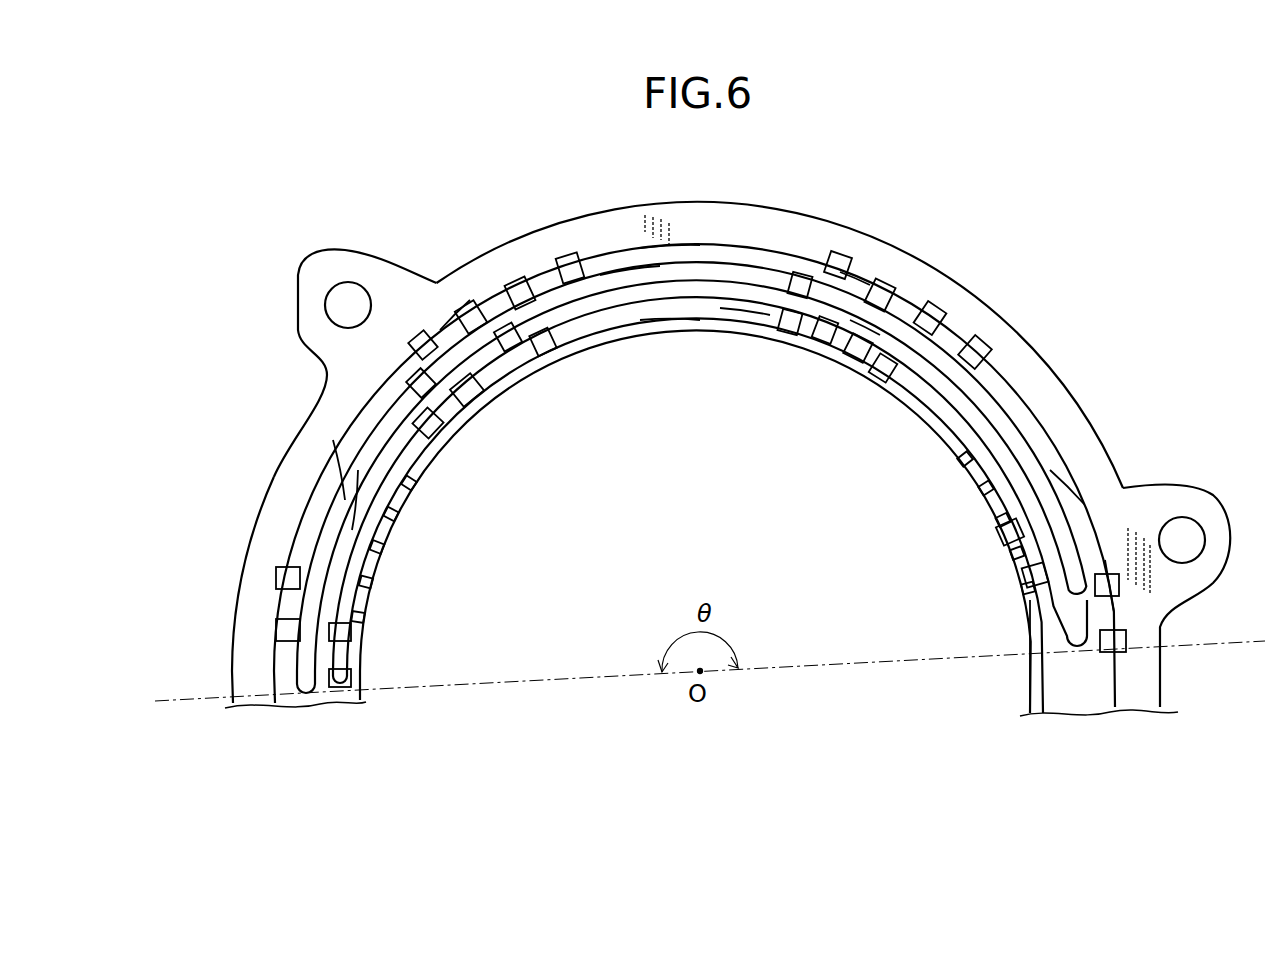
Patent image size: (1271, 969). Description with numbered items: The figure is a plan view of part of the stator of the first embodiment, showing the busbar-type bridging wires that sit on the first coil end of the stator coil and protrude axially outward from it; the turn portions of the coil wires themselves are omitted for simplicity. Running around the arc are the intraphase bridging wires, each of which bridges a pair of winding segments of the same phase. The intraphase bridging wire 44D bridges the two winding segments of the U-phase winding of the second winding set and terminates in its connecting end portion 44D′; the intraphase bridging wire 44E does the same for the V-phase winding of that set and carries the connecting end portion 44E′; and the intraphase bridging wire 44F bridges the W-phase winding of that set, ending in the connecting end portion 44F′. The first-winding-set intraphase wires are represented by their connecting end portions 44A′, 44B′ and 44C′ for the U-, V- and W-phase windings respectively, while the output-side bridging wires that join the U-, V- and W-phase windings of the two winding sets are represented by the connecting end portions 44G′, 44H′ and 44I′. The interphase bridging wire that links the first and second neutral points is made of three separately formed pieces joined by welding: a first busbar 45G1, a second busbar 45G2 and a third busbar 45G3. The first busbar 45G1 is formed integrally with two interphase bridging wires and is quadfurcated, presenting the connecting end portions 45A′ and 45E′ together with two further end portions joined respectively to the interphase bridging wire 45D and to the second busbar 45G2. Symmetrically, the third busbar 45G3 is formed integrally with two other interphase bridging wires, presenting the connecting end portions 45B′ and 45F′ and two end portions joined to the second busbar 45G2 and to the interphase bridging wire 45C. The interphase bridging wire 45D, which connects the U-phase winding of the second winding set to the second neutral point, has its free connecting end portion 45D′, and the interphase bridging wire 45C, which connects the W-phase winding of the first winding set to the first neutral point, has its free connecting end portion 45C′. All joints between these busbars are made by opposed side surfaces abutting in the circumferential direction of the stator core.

The first busbar 45G1 is at (452, 326).
The connecting end portion of intraphase bridging wire 44D 44D′ is at (463, 353).
The connecting end portion of intraphase bridging wire 44H 44H′ is at (535, 280).
The second busbar 45G2 is at (668, 330).
The connecting end portion of interphase bridging wire 45B 45B′ is at (817, 262).
The third busbar 45G3 is at (857, 295).
The connecting end portion of intraphase bridging wire 44E 44E′ is at (905, 300).
The connecting end portion of intraphase bridging wire 44I 44I′ is at (967, 340).
The connecting end portion of interphase bridging wire 45A 45A′ is at (417, 353).
The connecting end portion of intraphase bridging wire 44B 44B′ is at (630, 338).
The connecting end portion of interphase bridging wire 45E 45E′ is at (520, 353).
The intraphase bridging wire 44E is at (670, 330).
The connecting end portion of interphase bridging wire 45F 45F′ is at (873, 340).
The interphase bridging wire 45C is at (1057, 462).
The interphase bridging wire 45D is at (343, 493).
The intraphase bridging wire 44D is at (363, 517).
The connecting end portion of interphase bridging wire 45C 45C′ is at (1098, 550).
The connecting end portion of intraphase bridging wire 44C 44C′ is at (1020, 530).
The connecting end portion of intraphase bridging wire 44G 44G′ is at (288, 590).
The connecting end portion of intraphase bridging wire 44A 44A′ is at (343, 622).
The intraphase bridging wire 44F is at (1070, 620).
The connecting end portion of intraphase bridging wire 44F 44F′ is at (1120, 613).
The connecting end portion of interphase bridging wire 45D 45D′ is at (343, 657).